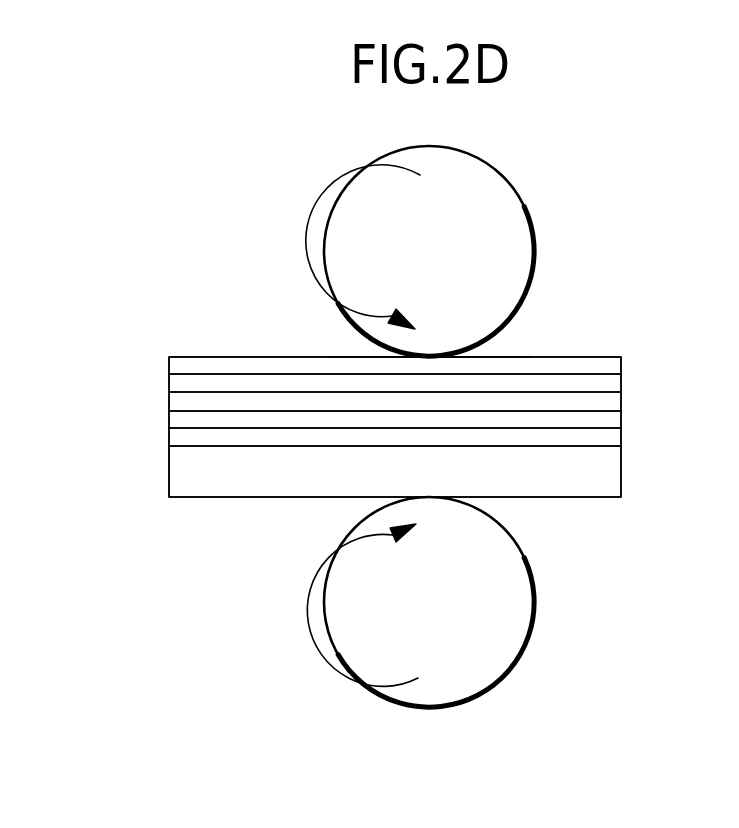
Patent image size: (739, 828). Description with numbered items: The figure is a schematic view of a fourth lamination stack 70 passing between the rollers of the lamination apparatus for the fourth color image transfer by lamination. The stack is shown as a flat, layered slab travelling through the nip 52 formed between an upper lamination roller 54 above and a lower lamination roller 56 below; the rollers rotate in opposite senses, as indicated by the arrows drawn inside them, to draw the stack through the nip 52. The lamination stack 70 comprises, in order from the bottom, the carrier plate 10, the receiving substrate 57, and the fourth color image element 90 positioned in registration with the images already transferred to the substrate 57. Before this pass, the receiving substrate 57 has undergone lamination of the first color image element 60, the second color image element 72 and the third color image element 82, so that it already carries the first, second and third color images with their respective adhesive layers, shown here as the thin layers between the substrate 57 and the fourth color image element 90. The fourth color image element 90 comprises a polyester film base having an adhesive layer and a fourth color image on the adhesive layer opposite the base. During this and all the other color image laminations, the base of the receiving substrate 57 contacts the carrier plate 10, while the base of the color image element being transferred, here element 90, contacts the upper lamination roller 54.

The carrier plate 10 is at (621, 474).
The nip 52 is at (338, 342).
The upper lamination roller 54 is at (447, 242).
The lower lamination roller 56 is at (445, 592).
The receiving substrate 57 is at (621, 438).
The first color image element 60 is at (621, 420).
The fourth lamination stack 70 is at (195, 340).
The second color image element 72 is at (621, 401).
The third color image element 82 is at (621, 382).
The fourth color image element 90 is at (621, 364).